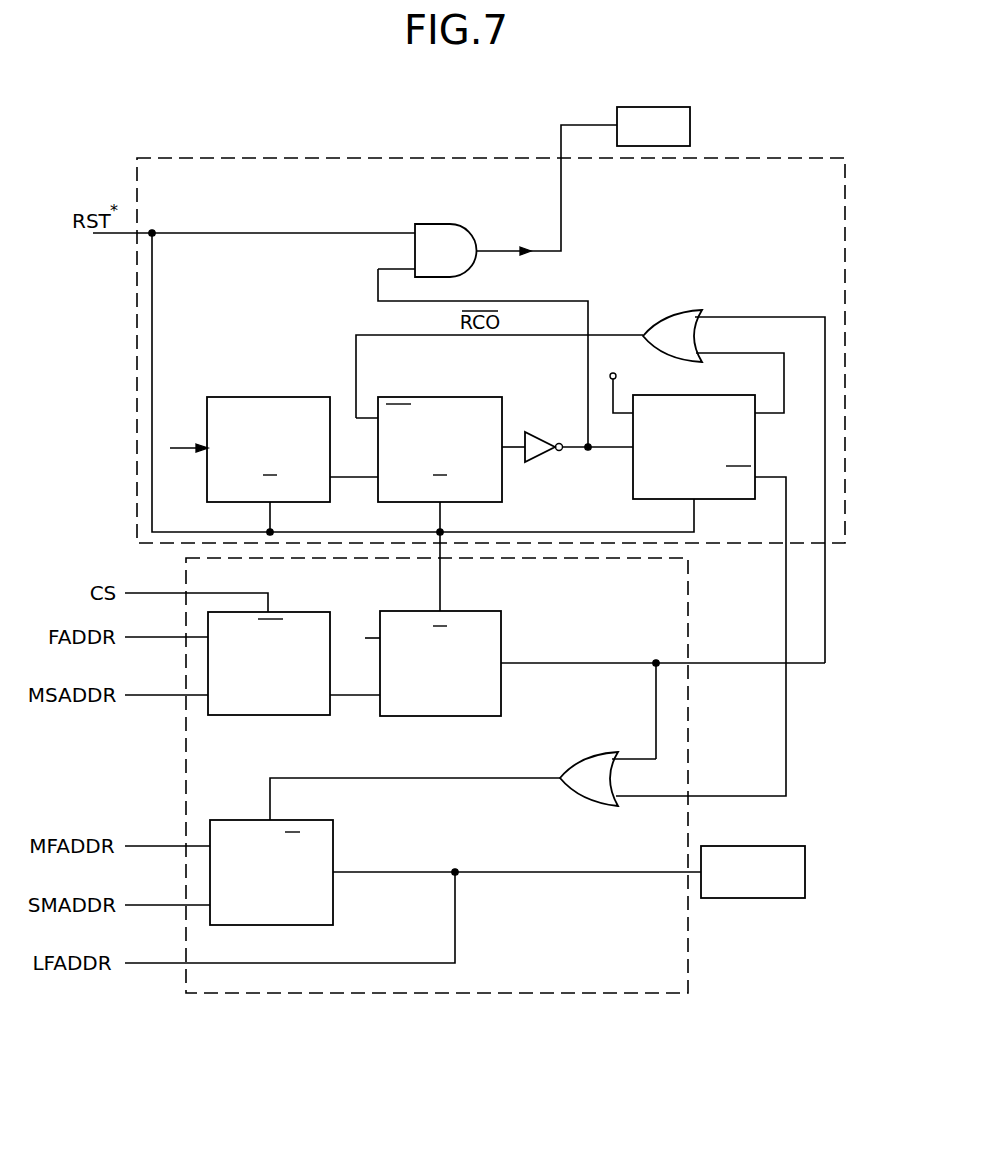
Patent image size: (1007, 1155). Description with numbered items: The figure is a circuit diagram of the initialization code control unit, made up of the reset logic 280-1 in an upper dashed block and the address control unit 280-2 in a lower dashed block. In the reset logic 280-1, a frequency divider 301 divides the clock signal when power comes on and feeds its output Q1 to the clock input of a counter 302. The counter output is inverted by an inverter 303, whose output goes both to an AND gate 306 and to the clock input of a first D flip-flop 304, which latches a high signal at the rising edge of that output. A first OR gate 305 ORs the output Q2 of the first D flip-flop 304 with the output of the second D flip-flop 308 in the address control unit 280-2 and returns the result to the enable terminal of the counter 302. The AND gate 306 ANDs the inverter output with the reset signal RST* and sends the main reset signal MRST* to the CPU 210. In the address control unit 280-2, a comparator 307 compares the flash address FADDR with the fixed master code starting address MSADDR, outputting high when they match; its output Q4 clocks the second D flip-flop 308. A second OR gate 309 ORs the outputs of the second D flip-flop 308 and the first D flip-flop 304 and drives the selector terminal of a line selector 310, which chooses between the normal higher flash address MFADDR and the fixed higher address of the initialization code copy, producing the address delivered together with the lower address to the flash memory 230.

The reset logic 280-1 is at (282, 158).
The CPU 210 is at (690, 125).
The AND gate 306 is at (438, 224).
The first OR gate 305 is at (681, 310).
The inverter 303 is at (541, 432).
The frequency divider 301 is at (330, 494).
The counter 302 is at (502, 494).
The first D flip-flop 304 is at (726, 499).
The comparator 307 is at (308, 612).
The second D flip-flop 308 is at (482, 611).
The second OR gate 309 is at (592, 752).
The line selector 310 is at (226, 820).
The flash memory 230 is at (805, 870).
The address control unit 280-2 is at (688, 948).